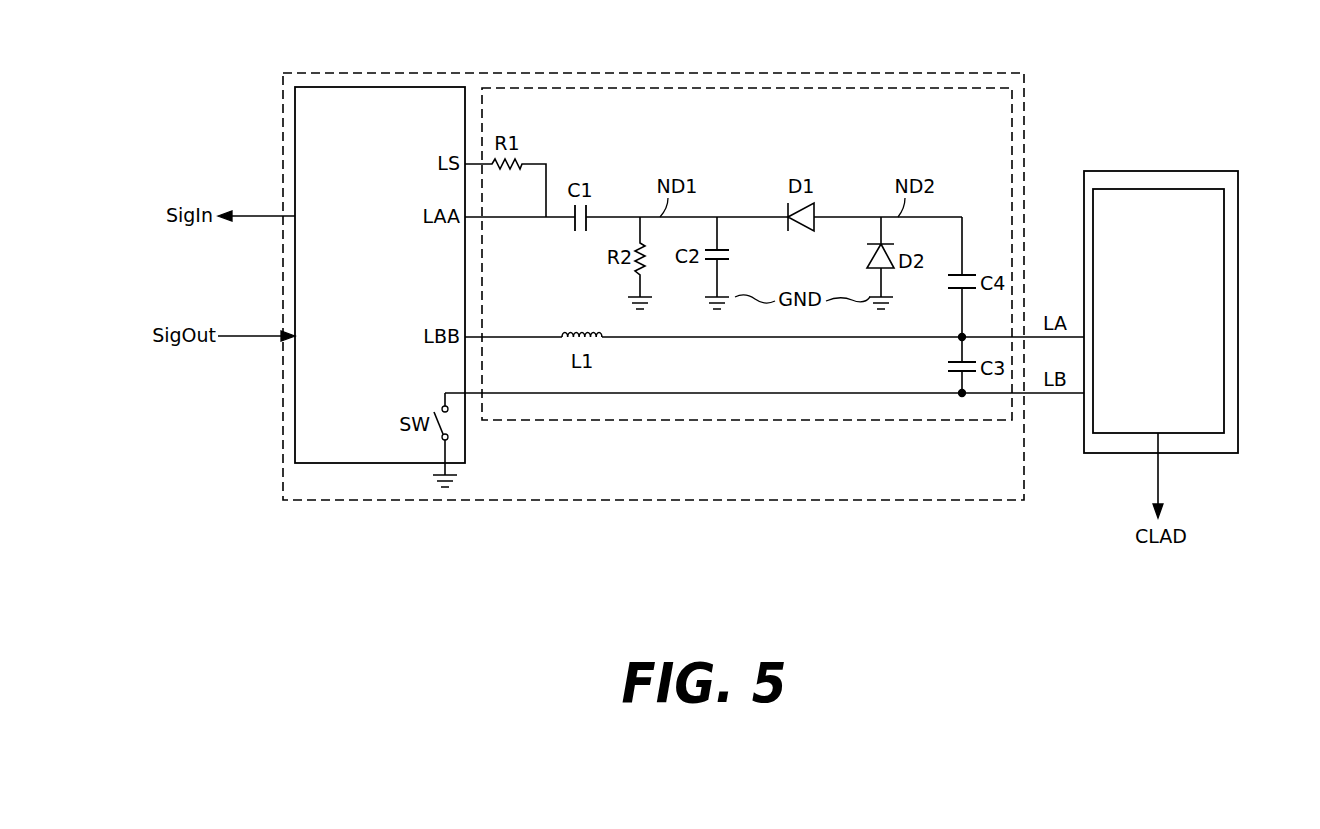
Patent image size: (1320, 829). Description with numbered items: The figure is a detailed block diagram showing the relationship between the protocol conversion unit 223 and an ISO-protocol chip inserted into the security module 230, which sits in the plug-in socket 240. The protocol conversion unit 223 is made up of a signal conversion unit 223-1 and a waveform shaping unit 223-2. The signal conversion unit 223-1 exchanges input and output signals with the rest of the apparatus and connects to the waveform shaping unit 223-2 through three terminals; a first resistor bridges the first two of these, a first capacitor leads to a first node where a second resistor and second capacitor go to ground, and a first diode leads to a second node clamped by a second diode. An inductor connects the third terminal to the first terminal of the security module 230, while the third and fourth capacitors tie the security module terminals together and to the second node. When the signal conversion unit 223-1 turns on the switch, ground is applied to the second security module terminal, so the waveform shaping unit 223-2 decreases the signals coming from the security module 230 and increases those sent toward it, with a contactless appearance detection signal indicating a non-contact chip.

The protocol conversion unit 223 is at (722, 500).
The signal conversion unit 223-1 is at (415, 87).
The waveform shaping unit 223-2 is at (767, 88).
The security module 230 is at (1165, 189).
The plug-in socket 240 is at (1100, 453).